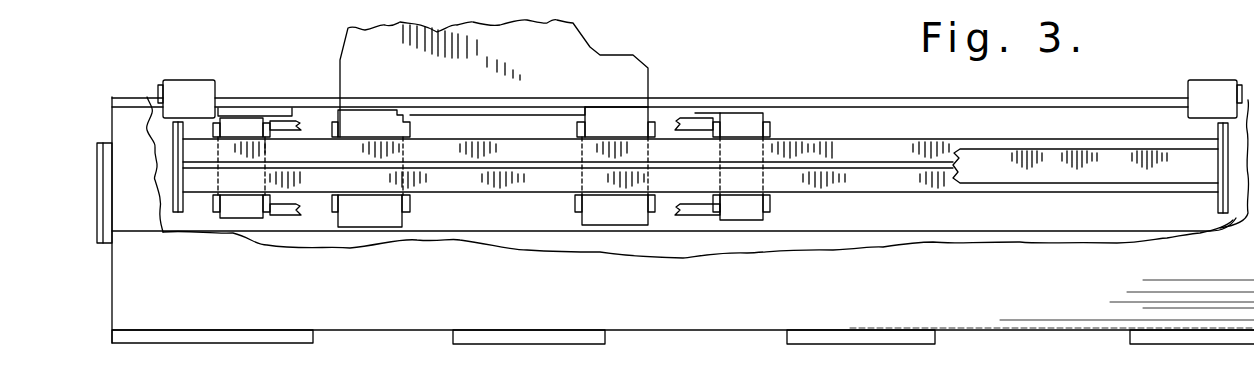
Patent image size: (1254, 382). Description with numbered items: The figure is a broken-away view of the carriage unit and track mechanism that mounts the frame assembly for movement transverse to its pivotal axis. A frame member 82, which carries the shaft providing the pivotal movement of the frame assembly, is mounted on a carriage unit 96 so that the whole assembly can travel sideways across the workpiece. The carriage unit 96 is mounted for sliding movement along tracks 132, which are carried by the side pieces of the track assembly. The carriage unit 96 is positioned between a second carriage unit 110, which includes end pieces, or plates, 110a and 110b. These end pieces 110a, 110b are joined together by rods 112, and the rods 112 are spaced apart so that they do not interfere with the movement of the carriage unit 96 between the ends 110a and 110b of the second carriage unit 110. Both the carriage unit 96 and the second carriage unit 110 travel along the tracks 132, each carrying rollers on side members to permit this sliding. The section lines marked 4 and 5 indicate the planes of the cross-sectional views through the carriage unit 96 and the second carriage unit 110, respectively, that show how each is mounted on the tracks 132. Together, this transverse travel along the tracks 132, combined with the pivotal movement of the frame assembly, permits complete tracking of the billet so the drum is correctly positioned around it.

The frame member 82 is at (352, 37).
The carriage unit 96 is at (630, 102).
The second carriage unit 110 is at (771, 118).
The end piece 110a is at (750, 208).
The end piece 110b is at (237, 210).
The rods 112 is at (287, 212).
The tracks 132 is at (940, 183).
The section line 4- 4 is at (625, 13).
The section line 5- 5 is at (740, 57).